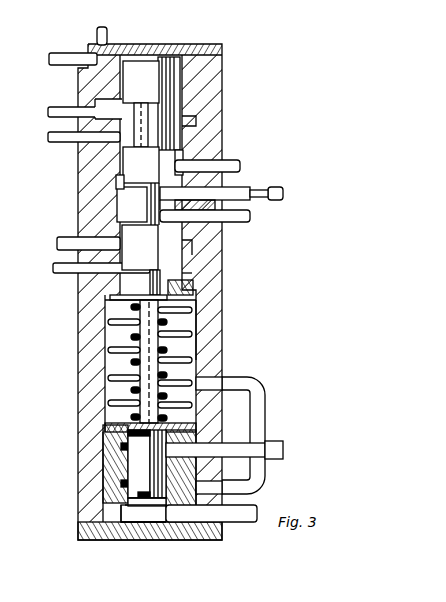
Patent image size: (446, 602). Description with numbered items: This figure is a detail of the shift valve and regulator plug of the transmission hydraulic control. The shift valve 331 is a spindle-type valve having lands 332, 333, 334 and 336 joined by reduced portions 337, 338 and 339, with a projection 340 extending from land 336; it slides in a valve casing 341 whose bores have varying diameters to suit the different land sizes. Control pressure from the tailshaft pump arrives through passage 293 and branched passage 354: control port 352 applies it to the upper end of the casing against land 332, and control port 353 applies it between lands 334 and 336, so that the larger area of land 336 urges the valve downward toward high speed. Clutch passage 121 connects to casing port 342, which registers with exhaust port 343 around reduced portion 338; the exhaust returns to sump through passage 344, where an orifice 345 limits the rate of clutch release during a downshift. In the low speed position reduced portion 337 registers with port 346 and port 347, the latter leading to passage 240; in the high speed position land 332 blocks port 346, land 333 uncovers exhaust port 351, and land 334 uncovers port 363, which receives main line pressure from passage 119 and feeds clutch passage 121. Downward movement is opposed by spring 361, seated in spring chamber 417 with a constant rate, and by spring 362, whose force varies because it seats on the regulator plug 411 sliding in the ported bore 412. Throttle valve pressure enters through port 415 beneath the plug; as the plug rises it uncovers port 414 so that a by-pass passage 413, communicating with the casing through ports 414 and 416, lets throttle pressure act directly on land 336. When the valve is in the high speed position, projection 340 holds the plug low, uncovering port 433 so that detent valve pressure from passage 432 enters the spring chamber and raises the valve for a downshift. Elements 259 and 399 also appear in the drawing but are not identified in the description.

The passage 293 is at (96, 36).
The branched passage 354 is at (75, 59).
The control port 352 is at (125, 58).
The shift valve 331 is at (182, 50).
The land 332 is at (205, 83).
The reduced portion 337 is at (182, 110).
The valve casing 341 is at (196, 121).
The land 333 is at (195, 141).
The exhaust port 351 is at (243, 158).
The orifice 345 is at (260, 190).
The passage 344 is at (283, 195).
The clutch passage 121 is at (248, 219).
The casing port 342 is at (192, 218).
The land 334 is at (210, 247).
The reduced portion 339 is at (215, 274).
The land 336 is at (200, 292).
The projection 340 is at (200, 311).
The spring 362 is at (205, 340).
The port 416 is at (213, 383).
The by-pass passage 413 is at (260, 407).
The passage 432 is at (283, 450).
The conduit 399 is at (243, 522).
The port 415 is at (190, 507).
The ported bore 412 is at (137, 503).
The port 414 is at (127, 483).
The regulator plug 411 is at (142, 468).
The port 433 is at (125, 445).
The spring 361 is at (115, 403).
The spring chamber 417 is at (112, 370).
The control port 353 is at (74, 310).
The passage 119 is at (58, 266).
The port 363 is at (115, 248).
The reduced portion 338 is at (143, 204).
The port 347 is at (118, 181).
The passage 240 is at (64, 143).
The exhaust port 343 is at (141, 143).
The port 346 is at (112, 110).
The conduit 259 is at (73, 112).